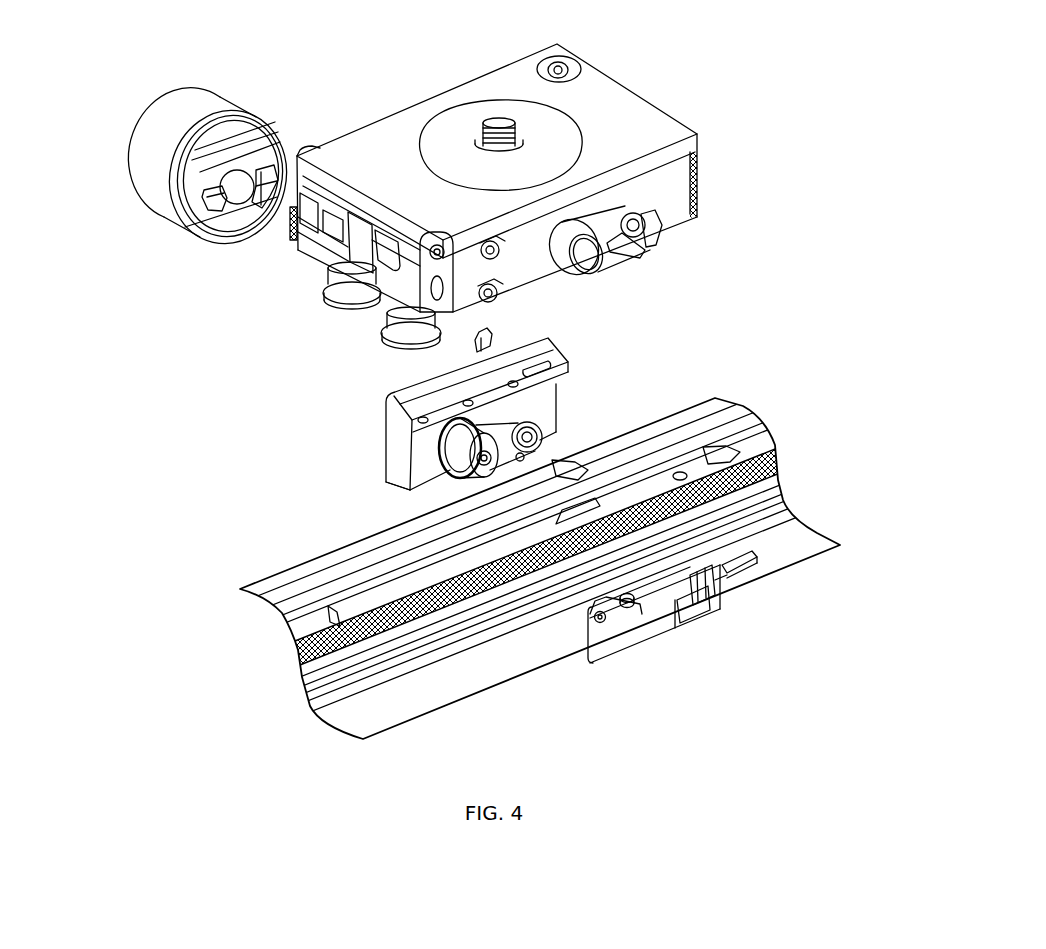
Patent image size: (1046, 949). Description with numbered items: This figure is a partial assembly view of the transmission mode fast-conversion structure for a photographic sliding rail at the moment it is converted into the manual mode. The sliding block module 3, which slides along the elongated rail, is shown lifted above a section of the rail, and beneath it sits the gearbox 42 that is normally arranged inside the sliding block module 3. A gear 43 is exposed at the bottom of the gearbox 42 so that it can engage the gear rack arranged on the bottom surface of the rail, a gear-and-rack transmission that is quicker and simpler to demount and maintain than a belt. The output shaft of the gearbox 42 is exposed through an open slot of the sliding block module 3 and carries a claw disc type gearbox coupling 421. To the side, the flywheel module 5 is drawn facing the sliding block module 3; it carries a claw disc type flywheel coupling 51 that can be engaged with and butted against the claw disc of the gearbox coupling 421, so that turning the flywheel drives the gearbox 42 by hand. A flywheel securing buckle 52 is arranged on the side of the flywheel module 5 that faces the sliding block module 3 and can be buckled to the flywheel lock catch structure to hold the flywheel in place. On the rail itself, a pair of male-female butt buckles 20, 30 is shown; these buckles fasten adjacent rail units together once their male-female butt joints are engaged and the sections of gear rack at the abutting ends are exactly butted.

The sliding block module 3 is at (638, 135).
The flywheel module 5 is at (213, 108).
The claw disc type flywheel coupling 51 is at (257, 210).
The flywheel securing buckle 52 is at (182, 228).
The gearbox 42 is at (397, 437).
The claw disc type gearbox coupling 421 is at (493, 330).
The gear 43 is at (450, 472).
The female butt buckle 30 is at (658, 628).
The male butt buckle 20 is at (722, 595).